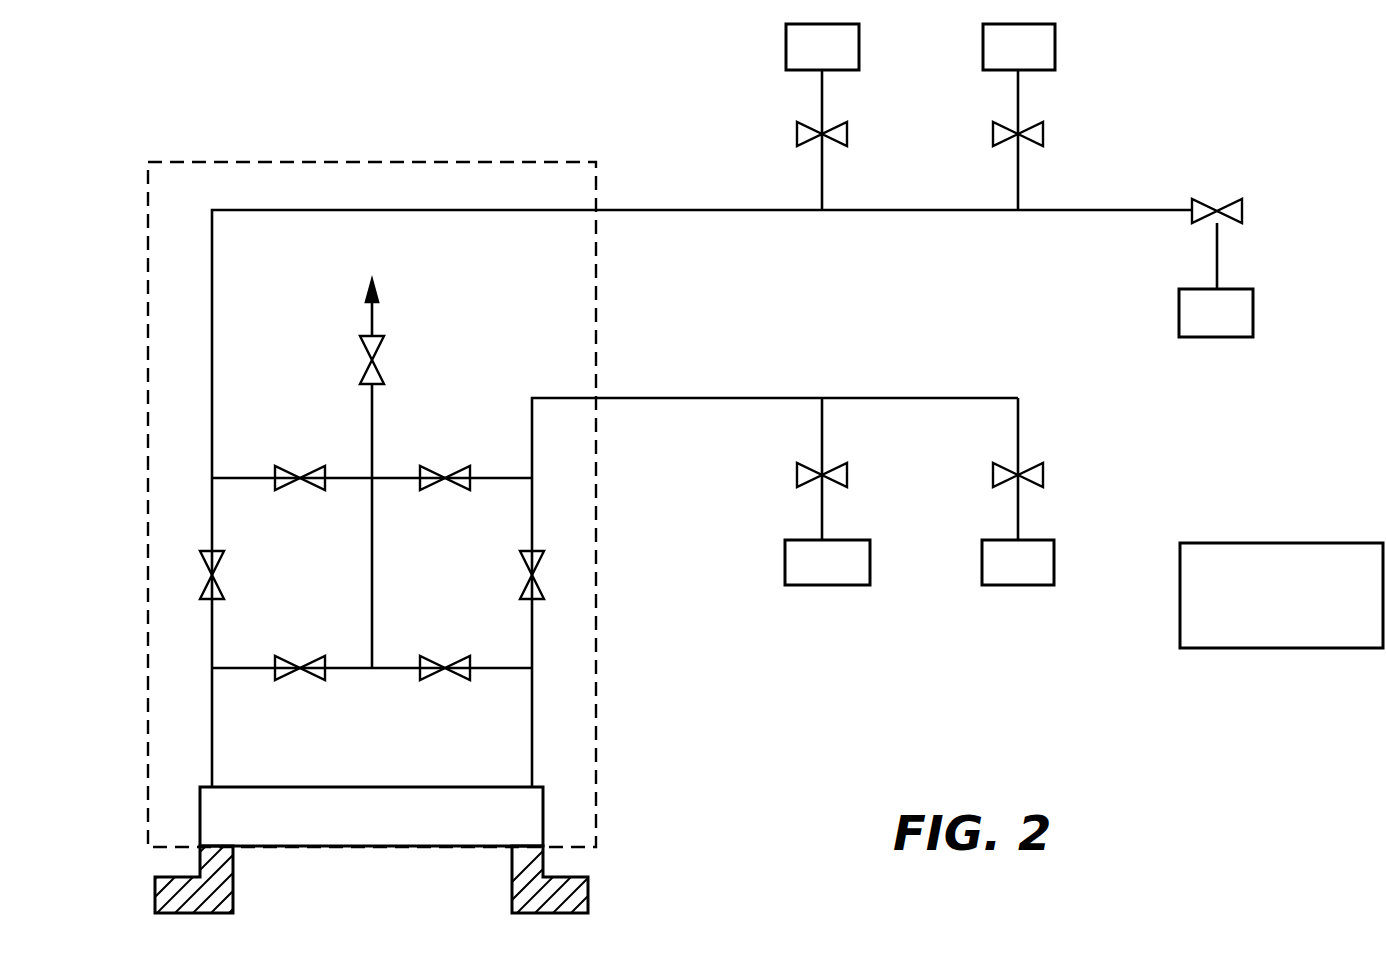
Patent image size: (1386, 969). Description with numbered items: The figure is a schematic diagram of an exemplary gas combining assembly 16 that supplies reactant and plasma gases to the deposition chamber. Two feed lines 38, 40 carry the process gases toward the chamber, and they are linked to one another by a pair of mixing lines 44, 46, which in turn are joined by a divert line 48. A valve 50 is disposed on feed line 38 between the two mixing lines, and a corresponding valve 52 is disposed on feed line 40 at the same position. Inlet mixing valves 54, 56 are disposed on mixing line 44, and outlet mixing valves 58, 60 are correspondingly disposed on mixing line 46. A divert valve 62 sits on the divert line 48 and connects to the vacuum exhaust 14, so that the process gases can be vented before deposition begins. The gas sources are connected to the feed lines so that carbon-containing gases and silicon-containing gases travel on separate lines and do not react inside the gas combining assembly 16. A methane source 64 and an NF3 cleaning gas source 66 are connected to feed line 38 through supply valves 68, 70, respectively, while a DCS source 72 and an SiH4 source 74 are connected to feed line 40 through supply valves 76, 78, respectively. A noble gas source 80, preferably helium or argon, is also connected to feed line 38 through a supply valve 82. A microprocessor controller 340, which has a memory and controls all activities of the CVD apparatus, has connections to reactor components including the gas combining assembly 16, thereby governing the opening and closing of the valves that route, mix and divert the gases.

The vacuum exhaust 14 is at (372, 291).
The gas combining assembly 16 is at (597, 697).
The feed line 38 is at (668, 210).
The feed line 40 is at (668, 398).
The mixing line 44 is at (352, 478).
The mixing line 46 is at (352, 668).
The divert line 48 is at (375, 405).
The valve 50 is at (225, 590).
The valve 52 is at (519, 590).
The inlet mixing valve 54 is at (279, 492).
The inlet mixing valve 56 is at (457, 492).
The outlet mixing valve 58 is at (279, 682).
The outlet mixing valve 60 is at (457, 682).
The divert valve 62 is at (384, 347).
The methane source 64 is at (982, 42).
The NF3 cleaning gas source 66 is at (785, 42).
The supply valve 68 is at (993, 134).
The supply valve 70 is at (797, 134).
The DCS source 72 is at (981, 562).
The SiH4 source 74 is at (784, 562).
The supply valve 76 is at (993, 474).
The supply valve 78 is at (797, 474).
The noble gas source 80 is at (1178, 313).
The supply valve 82 is at (1243, 212).
The microprocessor controller 340 is at (1296, 543).